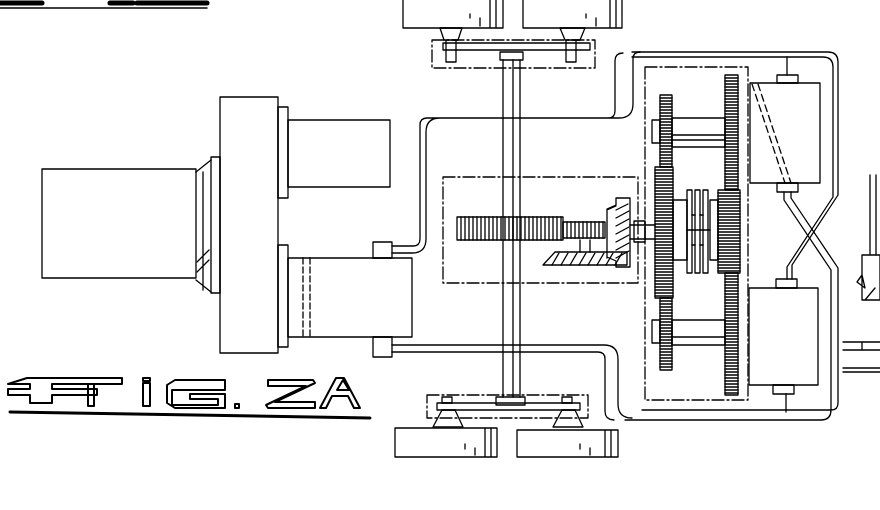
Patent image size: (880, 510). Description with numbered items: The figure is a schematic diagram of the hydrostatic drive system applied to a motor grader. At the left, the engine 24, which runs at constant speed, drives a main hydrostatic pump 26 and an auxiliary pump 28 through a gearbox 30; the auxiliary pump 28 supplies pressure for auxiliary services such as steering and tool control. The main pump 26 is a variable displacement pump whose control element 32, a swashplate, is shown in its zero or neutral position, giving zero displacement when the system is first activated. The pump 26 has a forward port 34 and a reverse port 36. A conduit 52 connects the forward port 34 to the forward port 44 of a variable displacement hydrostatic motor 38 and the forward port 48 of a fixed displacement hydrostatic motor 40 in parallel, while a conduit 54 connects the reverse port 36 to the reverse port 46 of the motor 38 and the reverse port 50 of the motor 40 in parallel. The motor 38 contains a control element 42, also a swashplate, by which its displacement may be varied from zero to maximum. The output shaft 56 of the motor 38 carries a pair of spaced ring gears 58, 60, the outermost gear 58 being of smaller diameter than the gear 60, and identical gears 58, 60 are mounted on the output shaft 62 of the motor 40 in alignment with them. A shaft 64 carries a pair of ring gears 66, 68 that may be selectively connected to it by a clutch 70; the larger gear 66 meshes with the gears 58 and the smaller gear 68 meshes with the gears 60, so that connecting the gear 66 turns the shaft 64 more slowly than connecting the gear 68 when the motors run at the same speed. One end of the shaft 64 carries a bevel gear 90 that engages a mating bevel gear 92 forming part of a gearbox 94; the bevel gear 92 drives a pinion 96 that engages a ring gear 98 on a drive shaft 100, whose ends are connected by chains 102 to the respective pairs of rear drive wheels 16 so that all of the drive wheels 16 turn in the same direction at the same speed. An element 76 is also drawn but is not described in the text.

The rear drive wheels 16 is at (538, 452).
The engine 24 is at (129, 226).
The main hydrostatic pump 26 is at (353, 260).
The auxiliary pump 28 is at (342, 116).
The gearbox 30 is at (226, 131).
The control element 32 is at (318, 306).
The forward port 34 is at (385, 238).
The reverse port 36 is at (381, 359).
The variable displacement hydrostatic motor 38 is at (812, 108).
The fixed displacement hydrostatic motor 40 is at (795, 358).
The control element 42 is at (772, 58).
The forward port 44 is at (792, 75).
The reverse port 46 is at (789, 192).
The forward port 48 is at (792, 279).
The reverse port 50 is at (784, 399).
The conduit 52 is at (465, 104).
The conduit 54 is at (440, 342).
The output shaft 56 is at (712, 120).
The ring gear 58 is at (665, 98).
The ring gear 60 is at (731, 75).
The output shaft 62 is at (683, 343).
The shaft 64 is at (636, 246).
The ring gear 66 is at (655, 292).
The ring gear 68 is at (741, 259).
The clutch 70 is at (690, 285).
The control linkage 76 is at (870, 211).
The bevel gear 90 is at (618, 197).
The bevel gear 92 is at (579, 266).
The gearbox 94 is at (533, 176).
The pinion 96 is at (585, 222).
The ring gear 98 is at (488, 214).
The drive shaft 100 is at (502, 137).
The chains 102 is at (458, 395).